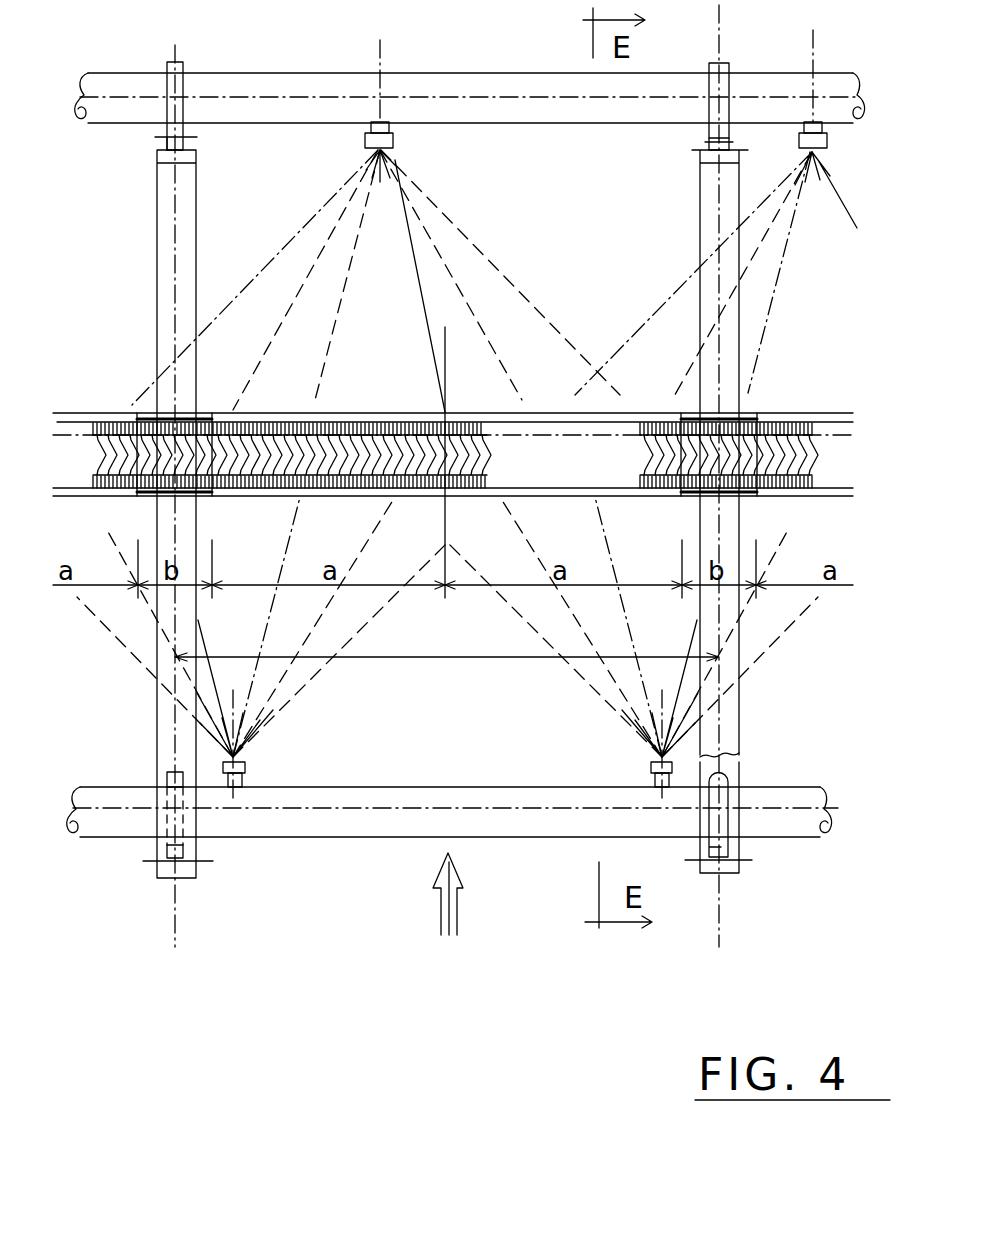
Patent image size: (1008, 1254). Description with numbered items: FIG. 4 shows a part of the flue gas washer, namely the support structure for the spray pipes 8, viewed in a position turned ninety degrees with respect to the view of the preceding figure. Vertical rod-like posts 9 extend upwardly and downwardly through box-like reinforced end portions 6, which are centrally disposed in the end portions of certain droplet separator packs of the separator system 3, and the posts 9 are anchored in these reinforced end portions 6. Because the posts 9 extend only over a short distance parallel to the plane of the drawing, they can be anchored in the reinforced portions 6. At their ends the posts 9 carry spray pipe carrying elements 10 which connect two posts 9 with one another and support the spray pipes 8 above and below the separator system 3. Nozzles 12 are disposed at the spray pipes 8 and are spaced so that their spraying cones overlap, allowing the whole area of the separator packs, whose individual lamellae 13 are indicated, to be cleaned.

The separator system 3 is at (538, 436).
The reinforced end portion 6 is at (209, 492).
The spray pipe 8 is at (530, 123).
The vertical rod-like post 9 is at (187, 250).
The spray pipe carrying element 10 is at (168, 60).
The nozzle 12 is at (393, 143).
The lamella 13 is at (357, 420).